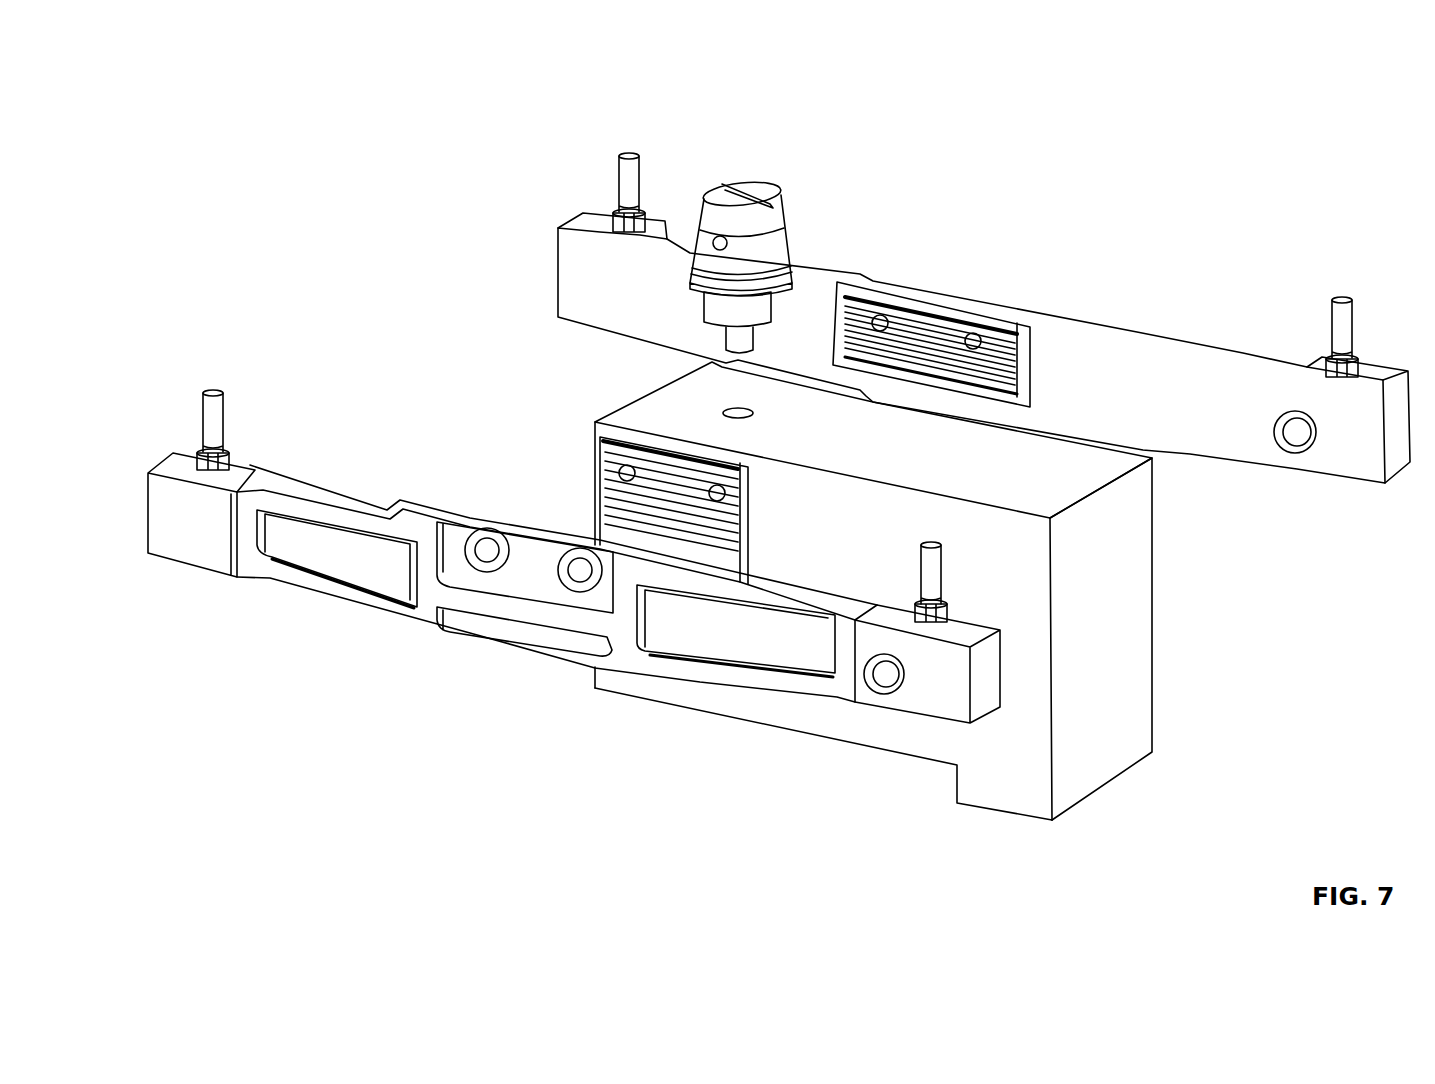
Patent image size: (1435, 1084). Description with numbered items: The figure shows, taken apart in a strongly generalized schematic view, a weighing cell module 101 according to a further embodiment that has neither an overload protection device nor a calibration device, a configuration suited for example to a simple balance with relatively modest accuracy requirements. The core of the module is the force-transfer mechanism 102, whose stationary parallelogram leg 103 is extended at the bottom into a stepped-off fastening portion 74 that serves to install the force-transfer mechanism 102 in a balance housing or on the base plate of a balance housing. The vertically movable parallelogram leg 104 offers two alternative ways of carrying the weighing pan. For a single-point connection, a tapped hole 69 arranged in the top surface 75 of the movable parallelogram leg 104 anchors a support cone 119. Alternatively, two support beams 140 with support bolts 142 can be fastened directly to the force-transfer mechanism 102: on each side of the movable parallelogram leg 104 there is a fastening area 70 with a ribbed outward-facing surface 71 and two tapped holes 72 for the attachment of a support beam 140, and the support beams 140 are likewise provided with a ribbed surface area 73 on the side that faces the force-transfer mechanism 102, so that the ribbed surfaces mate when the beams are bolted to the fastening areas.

The tapped hole 69 is at (738, 412).
The fastening area 70 is at (783, 373).
The ribbed outward-facing surface 71 is at (612, 490).
The tapped holes 72 is at (717, 495).
The ribbed surface area 73 is at (930, 337).
The stepped-off fastening portion 74 is at (998, 785).
The top surface 75 is at (943, 320).
The weighing cell module 101 is at (348, 247).
The force-transfer mechanism 102 is at (1195, 622).
The stationary parallelogram leg 103 is at (1137, 556).
The vertically movable parallelogram leg 104 is at (617, 410).
The support cone 119 is at (748, 182).
The support beams 140 is at (1158, 305).
The support bolts 142 is at (628, 183).